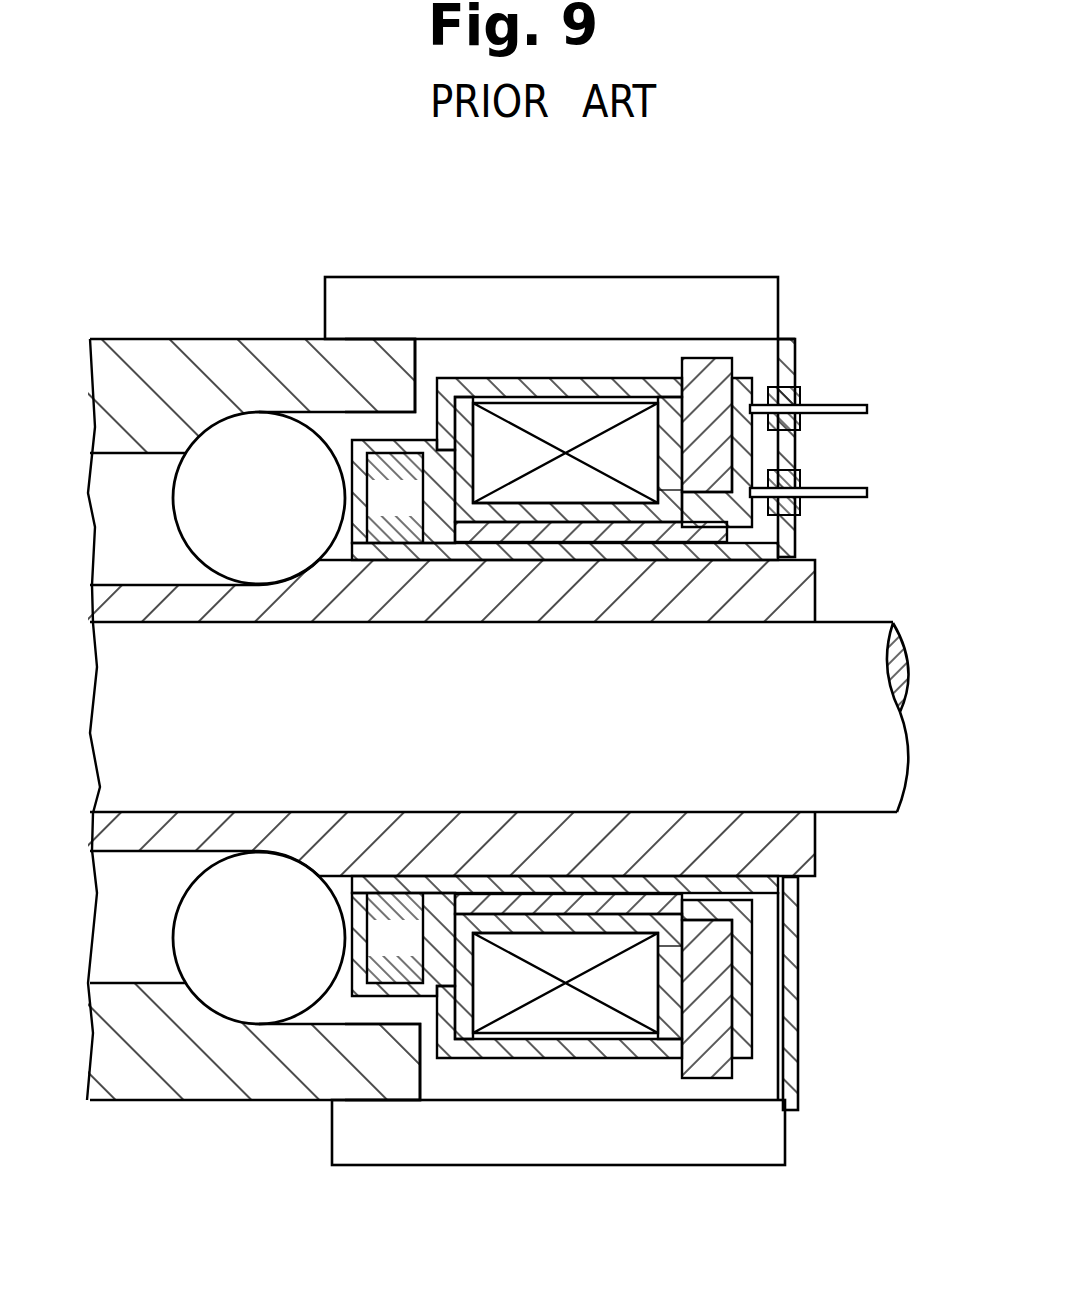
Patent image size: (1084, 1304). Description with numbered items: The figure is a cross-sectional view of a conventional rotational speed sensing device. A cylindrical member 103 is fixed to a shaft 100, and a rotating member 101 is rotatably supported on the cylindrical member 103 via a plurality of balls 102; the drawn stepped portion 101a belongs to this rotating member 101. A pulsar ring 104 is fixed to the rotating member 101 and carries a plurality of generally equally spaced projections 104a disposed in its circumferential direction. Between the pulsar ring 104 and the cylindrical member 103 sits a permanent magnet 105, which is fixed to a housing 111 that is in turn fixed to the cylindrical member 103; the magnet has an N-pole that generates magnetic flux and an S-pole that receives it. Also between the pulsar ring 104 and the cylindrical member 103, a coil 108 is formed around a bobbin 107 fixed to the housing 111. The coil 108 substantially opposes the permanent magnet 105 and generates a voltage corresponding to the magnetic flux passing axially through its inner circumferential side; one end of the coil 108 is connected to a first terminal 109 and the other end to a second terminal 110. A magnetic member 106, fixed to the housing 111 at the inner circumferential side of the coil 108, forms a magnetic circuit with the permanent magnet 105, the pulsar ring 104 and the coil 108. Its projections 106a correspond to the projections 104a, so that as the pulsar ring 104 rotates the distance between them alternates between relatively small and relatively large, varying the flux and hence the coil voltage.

The shaft 100 is at (858, 792).
The rotating member 101 is at (170, 352).
The housing stepped portion 101a is at (382, 360).
The balls 102 is at (263, 428).
The cylindrical member 103 is at (692, 608).
The pulsar ring 104 is at (600, 297).
The projections 104a is at (742, 307).
The permanent magnet 105 is at (390, 535).
The magnetic member 106 is at (552, 521).
The projections 106a is at (733, 362).
The bobbin 107 is at (490, 512).
The coil 108 is at (503, 437).
The first terminal 109 is at (845, 402).
The second terminal 110 is at (848, 498).
The housing 111 is at (685, 552).